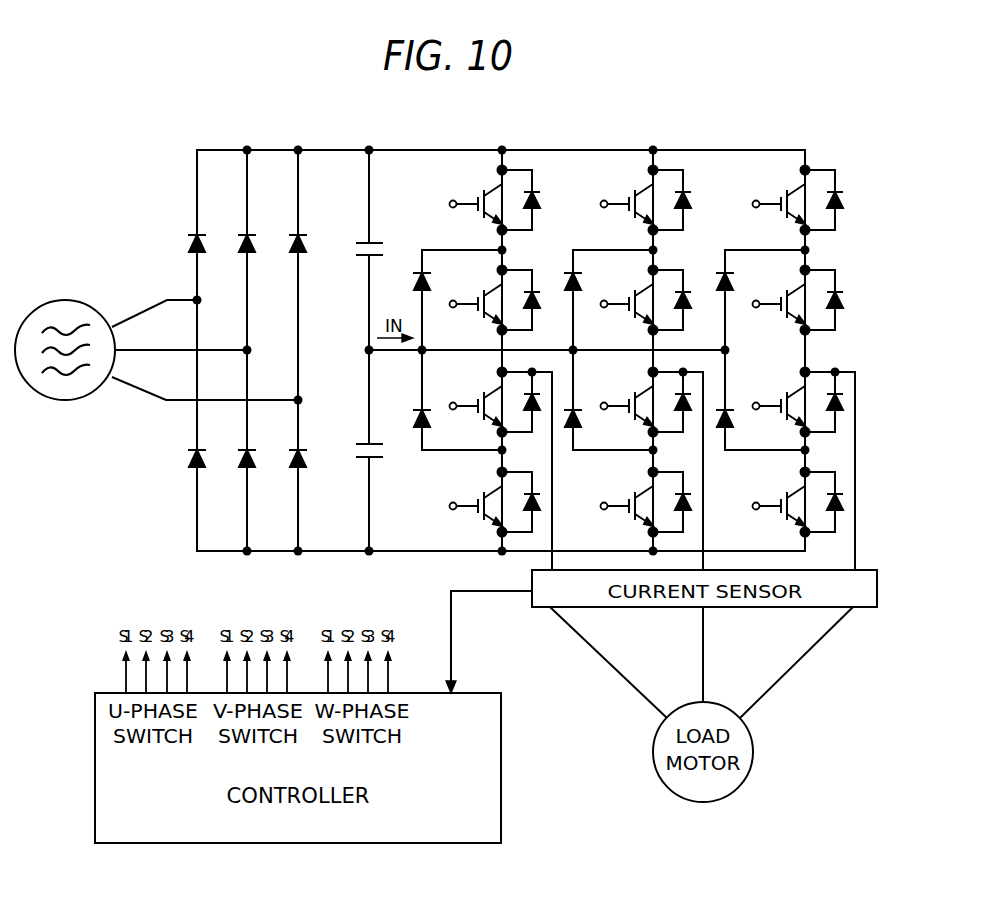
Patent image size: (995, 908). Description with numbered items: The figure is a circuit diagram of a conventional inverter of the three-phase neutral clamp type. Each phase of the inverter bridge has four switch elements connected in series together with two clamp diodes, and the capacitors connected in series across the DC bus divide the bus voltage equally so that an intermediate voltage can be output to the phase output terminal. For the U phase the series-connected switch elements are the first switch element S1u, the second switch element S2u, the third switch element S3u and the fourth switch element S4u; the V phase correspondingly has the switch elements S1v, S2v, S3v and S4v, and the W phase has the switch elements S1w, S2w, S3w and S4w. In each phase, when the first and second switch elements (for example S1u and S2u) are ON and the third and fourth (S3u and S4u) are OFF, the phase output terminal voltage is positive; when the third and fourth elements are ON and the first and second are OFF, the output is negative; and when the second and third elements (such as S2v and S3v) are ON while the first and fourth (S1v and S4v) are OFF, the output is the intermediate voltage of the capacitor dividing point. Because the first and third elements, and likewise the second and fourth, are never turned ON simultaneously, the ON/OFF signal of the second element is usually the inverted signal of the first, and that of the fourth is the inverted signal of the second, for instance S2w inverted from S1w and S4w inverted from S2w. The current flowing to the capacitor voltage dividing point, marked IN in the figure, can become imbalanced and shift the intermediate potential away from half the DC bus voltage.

The first switch element of U phase S1u is at (493, 198).
The second switch element of U phase S2u is at (493, 298).
The third switch element of U phase S3u is at (493, 400).
The fourth switch element of U phase S4u is at (493, 500).
The first switch element of V phase S1v is at (644, 198).
The second switch element of V phase S2v is at (644, 298).
The third switch element of V phase S3v is at (644, 400).
The fourth switch element of V phase S4v is at (644, 500).
The first switch element of W phase S1w is at (795, 198).
The second switch element of W phase S2w is at (795, 298).
The third switch element of W phase S3w is at (795, 400).
The fourth switch element of W phase S4w is at (795, 500).